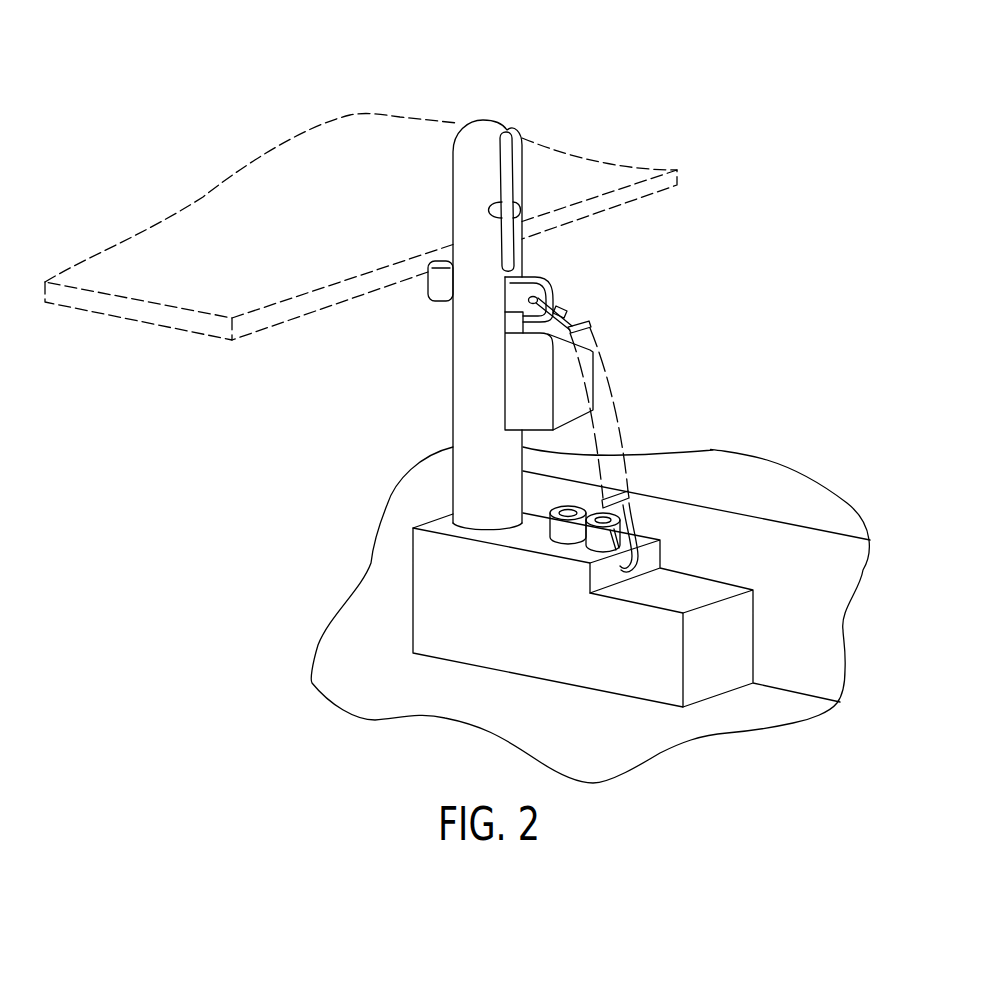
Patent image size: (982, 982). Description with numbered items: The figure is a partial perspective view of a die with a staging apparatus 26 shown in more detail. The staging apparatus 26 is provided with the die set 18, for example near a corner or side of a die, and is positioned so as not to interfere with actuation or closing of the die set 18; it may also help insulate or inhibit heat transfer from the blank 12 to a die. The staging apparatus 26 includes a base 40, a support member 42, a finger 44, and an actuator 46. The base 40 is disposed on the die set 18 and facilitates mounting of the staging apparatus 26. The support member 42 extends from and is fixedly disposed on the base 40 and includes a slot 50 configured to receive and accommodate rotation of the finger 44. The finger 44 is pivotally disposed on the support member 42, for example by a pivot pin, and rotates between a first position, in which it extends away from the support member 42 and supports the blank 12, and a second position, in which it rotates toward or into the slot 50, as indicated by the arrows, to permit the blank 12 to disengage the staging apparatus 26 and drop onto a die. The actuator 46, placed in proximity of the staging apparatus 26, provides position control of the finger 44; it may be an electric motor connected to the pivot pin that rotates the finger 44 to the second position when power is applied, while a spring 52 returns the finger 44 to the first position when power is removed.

The blank 12 is at (135, 310).
The die set 18 is at (388, 523).
The staging apparatus 26 is at (372, 97).
The base 40 is at (417, 540).
The support member 42 is at (466, 173).
The finger 44 is at (438, 375).
The actuator 46 is at (532, 387).
The slot 50 is at (567, 270).
The spring 52 is at (617, 397).